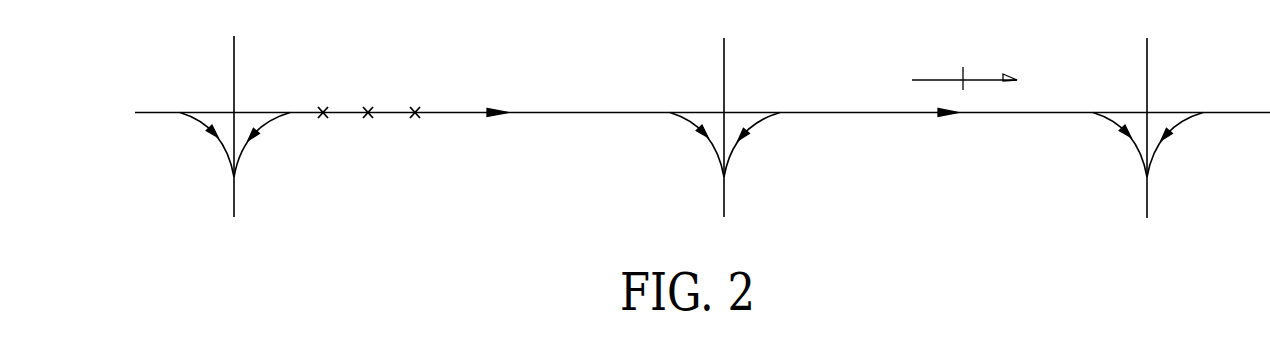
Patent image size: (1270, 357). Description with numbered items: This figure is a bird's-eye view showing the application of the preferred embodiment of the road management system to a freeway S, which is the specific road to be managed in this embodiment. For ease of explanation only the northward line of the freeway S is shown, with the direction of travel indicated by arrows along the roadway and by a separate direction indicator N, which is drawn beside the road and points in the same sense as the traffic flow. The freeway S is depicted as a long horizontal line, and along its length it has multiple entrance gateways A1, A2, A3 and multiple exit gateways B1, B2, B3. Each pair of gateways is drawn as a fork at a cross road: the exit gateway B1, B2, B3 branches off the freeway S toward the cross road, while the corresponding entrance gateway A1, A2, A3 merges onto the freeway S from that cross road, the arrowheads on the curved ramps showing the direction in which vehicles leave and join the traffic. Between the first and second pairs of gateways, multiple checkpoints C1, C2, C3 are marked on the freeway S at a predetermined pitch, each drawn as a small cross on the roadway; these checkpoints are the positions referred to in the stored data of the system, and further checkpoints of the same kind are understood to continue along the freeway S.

The freeway S is at (578, 112).
The entrance gateway A1 is at (267, 127).
The exit gateway B1 is at (203, 132).
The entrance gateway A2 is at (763, 128).
The exit gateway B2 is at (693, 132).
The entrance gateway A3 is at (1183, 128).
The exit gateway B3 is at (1112, 125).
The checkpoint C1 is at (323, 107).
The checkpoint C2 is at (368, 107).
The checkpoint C3 is at (415, 107).
The time direction indicator N is at (978, 82).